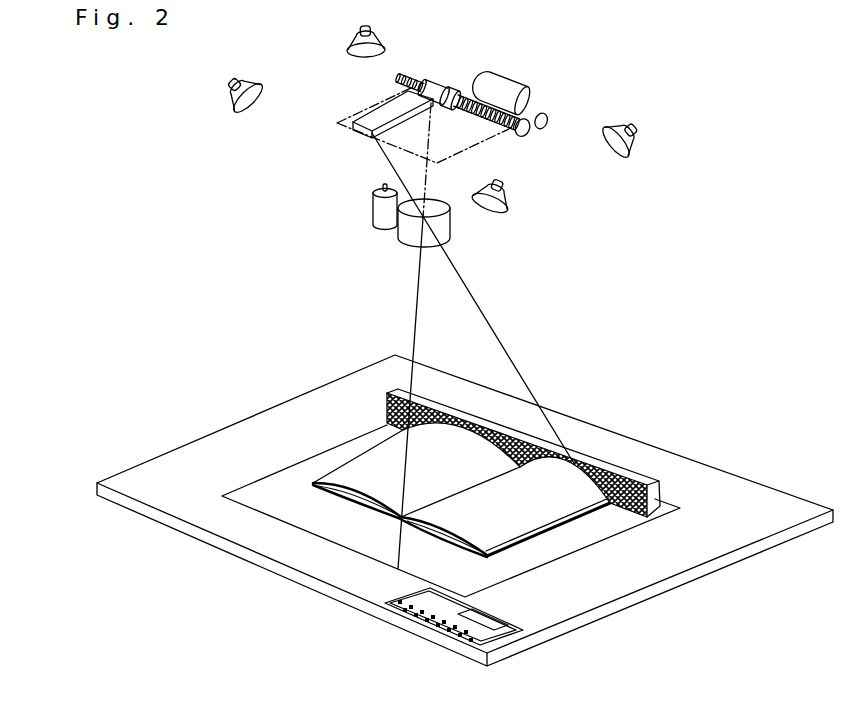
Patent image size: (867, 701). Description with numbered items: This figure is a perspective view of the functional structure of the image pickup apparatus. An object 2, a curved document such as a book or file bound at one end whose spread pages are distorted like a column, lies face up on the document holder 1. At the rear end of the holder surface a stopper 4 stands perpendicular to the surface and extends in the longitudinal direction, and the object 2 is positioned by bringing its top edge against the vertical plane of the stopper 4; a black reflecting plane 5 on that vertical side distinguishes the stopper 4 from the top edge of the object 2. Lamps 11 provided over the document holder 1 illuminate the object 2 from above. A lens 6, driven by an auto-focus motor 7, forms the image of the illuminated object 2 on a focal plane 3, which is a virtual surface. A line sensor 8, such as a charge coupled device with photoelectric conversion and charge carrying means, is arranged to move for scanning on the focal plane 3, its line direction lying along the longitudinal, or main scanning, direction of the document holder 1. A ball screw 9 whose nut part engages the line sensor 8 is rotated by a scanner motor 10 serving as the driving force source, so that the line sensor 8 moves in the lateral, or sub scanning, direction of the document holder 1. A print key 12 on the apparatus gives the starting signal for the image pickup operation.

The document holder 1 is at (97, 490).
The object 2 is at (365, 467).
The focal plane 3 is at (460, 157).
The stopper 4 is at (663, 500).
The black reflecting plane 5 is at (613, 480).
The lens 6 is at (397, 237).
The auto-focus motor 7 is at (373, 221).
The line sensor 8 is at (357, 132).
The ball screw 9 is at (443, 88).
The scanner motor 10 is at (524, 88).
The lamps 11 is at (227, 102).
The print key 12 is at (463, 633).